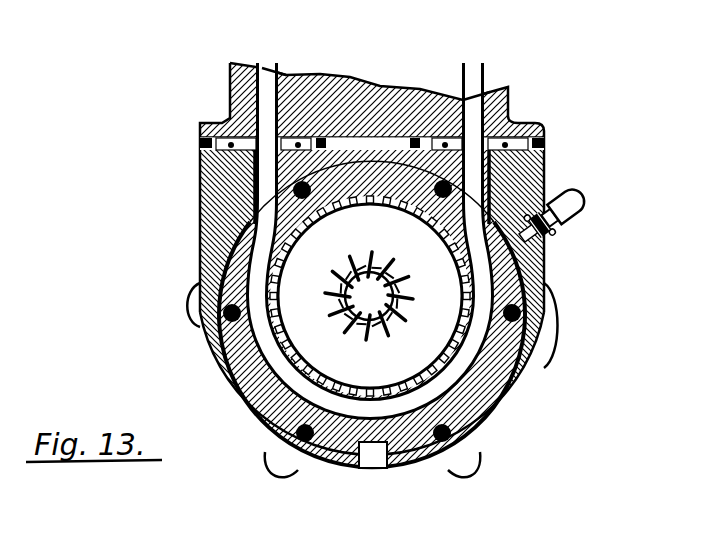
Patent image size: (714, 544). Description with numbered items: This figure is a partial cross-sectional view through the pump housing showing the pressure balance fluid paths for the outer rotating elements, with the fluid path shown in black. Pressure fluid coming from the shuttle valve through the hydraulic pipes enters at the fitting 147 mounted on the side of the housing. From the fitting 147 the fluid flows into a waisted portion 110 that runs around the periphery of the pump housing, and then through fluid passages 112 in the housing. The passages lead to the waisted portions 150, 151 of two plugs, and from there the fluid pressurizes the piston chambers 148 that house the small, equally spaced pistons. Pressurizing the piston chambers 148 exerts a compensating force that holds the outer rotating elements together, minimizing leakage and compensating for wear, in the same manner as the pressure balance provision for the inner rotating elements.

The waisted portion 110 is at (543, 264).
The fluid passages 112 is at (401, 314).
The fitting 147 is at (580, 197).
The piston chambers 148 is at (548, 356).
The waisted portion of plug 150 is at (532, 166).
The waisted portion of plug 151 is at (247, 181).